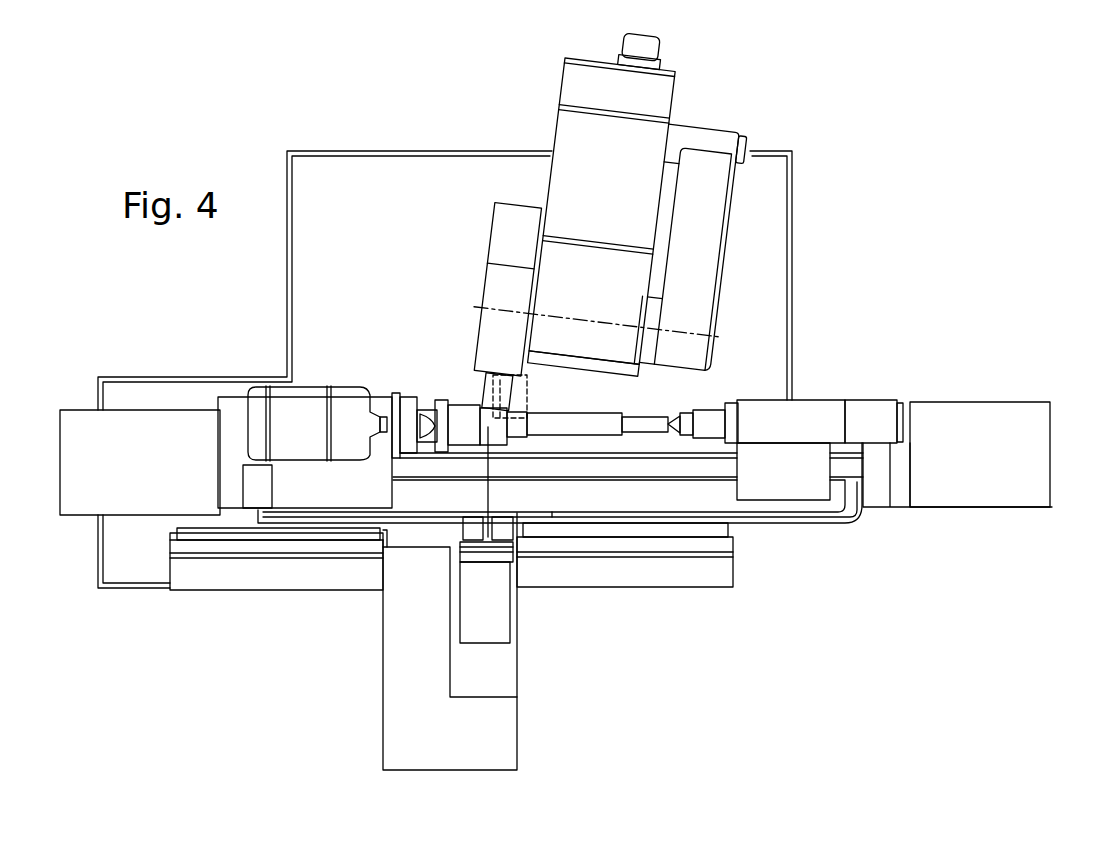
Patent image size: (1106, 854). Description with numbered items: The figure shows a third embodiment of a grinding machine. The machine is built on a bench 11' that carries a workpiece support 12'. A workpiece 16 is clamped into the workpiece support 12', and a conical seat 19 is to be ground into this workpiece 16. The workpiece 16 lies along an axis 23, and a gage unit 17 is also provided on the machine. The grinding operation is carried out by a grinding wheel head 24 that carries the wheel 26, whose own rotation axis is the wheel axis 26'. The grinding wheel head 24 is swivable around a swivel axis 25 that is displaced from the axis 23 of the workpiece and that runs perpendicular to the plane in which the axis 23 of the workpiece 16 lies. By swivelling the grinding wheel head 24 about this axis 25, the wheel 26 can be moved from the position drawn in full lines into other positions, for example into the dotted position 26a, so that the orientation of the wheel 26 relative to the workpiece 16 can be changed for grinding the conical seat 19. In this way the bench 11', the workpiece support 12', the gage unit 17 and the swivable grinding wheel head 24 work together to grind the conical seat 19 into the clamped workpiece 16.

The bench 11' is at (468, 369).
The workpiece support 12' is at (980, 435).
The workpiece 16 is at (648, 412).
The gage unit 17 is at (495, 632).
The conical seat 19 is at (498, 430).
The axis of the workpiece 23 is at (598, 428).
The grinding wheel head 24 is at (612, 202).
The swivel axis 25 is at (598, 301).
The grinding wheel 26 is at (476, 386).
The wheel axis 26' is at (507, 289).
The swivelled wheel position 26a is at (522, 397).